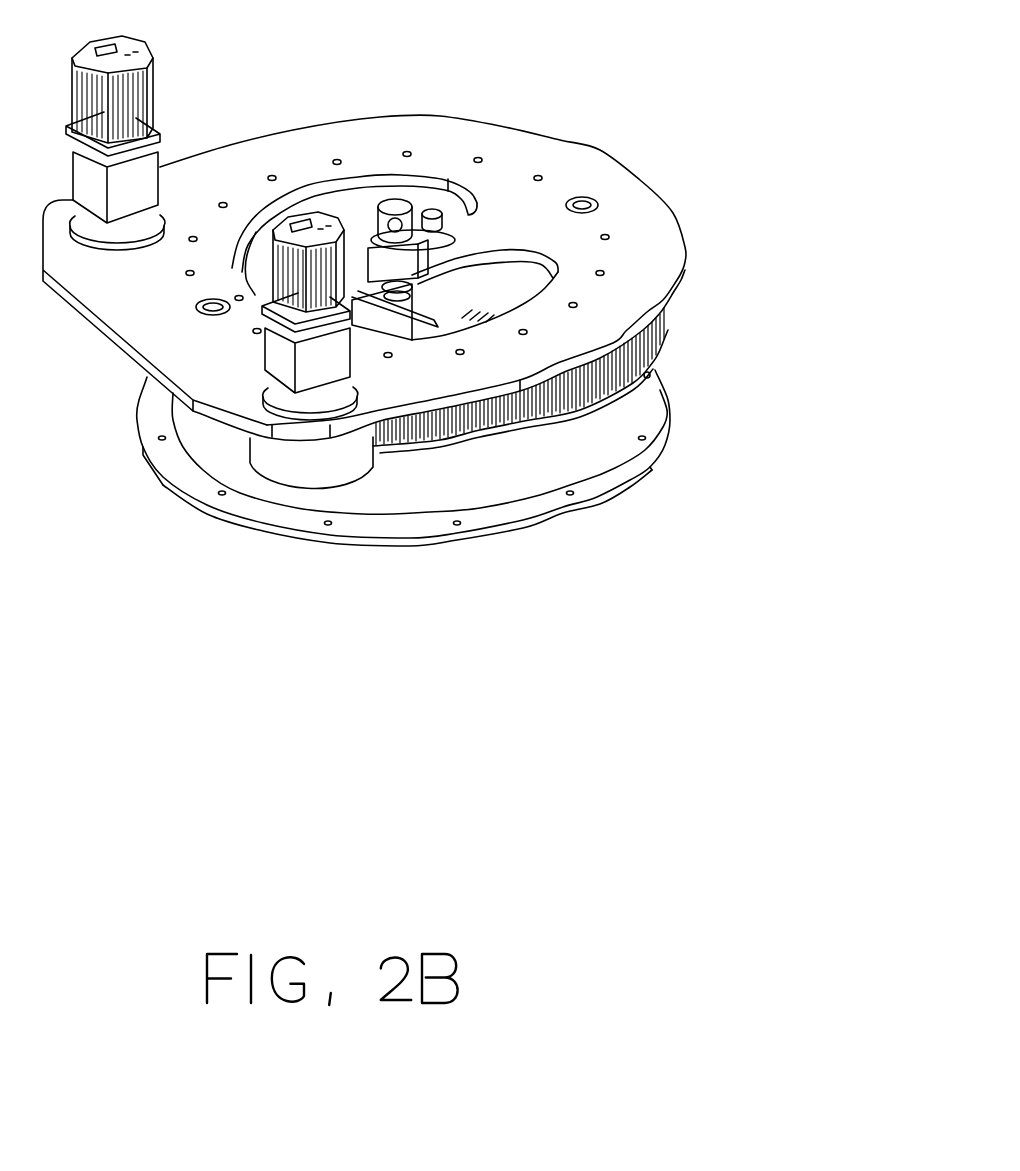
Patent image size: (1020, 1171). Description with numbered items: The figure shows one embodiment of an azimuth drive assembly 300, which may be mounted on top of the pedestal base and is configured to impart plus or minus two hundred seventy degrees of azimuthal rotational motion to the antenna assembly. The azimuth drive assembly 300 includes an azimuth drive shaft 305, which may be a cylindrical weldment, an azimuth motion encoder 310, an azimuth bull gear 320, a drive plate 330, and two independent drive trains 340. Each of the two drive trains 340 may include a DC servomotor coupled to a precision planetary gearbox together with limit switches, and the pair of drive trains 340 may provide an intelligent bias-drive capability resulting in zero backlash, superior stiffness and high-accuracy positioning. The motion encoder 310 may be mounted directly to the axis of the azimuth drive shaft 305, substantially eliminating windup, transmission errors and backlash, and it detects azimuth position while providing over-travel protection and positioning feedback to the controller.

The azimuth drive assembly 300 is at (440, 678).
The azimuth drive shaft 305 is at (530, 475).
The azimuth motion encoder 310 is at (413, 198).
The azimuth bull gear 320 is at (645, 365).
The drive plate 330 is at (722, 97).
The independent drive trains 340 is at (308, 197).